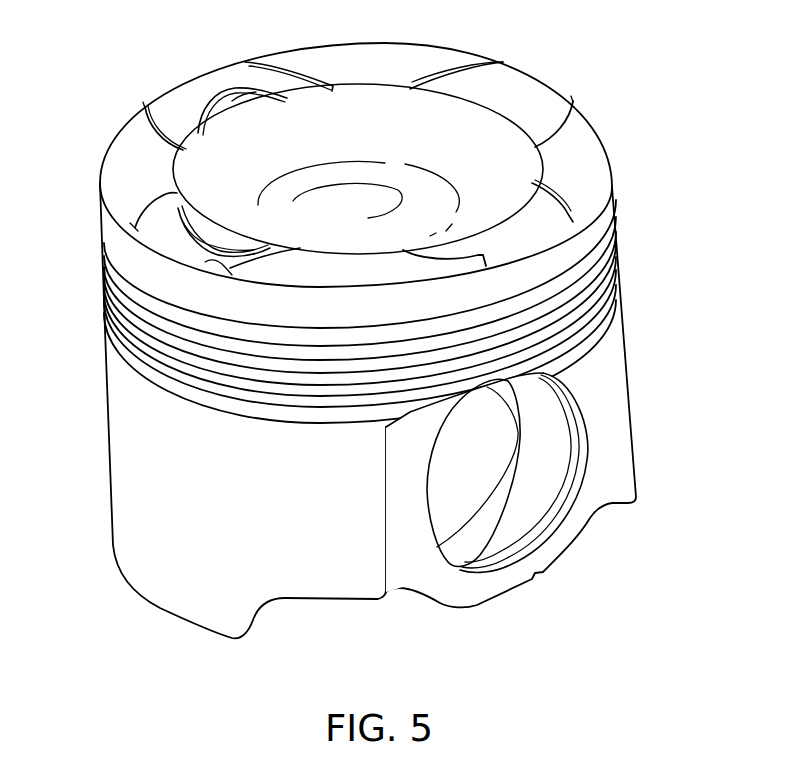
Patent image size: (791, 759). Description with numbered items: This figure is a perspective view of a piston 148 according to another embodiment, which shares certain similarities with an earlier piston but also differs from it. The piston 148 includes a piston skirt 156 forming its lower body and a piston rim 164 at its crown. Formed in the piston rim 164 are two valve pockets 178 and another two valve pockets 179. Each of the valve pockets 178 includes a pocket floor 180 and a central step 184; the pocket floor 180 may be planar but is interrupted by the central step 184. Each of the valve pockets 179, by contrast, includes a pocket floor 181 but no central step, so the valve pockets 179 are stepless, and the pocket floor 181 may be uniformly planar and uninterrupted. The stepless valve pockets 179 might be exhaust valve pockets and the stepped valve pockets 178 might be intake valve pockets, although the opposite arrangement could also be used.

The piston 148 is at (631, 123).
The piston skirt 156 is at (125, 440).
The piston rim 164 is at (102, 213).
The valve pocket 178 is at (211, 84).
The valve pocket 179 is at (502, 86).
The pocket floor 180 is at (176, 108).
The pocket floor 181 is at (526, 107).
The central step 184 is at (249, 103).